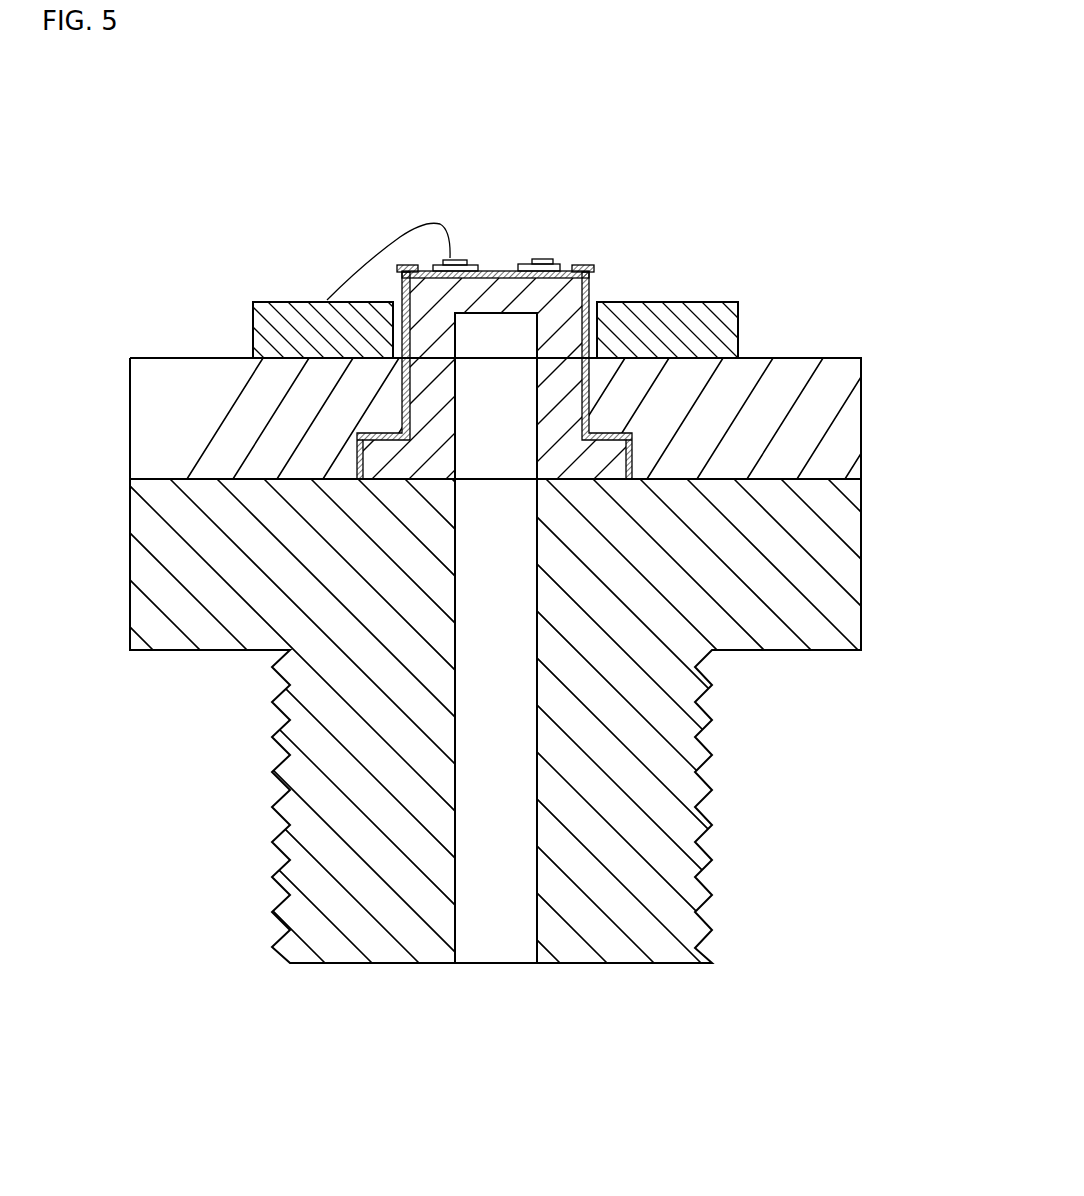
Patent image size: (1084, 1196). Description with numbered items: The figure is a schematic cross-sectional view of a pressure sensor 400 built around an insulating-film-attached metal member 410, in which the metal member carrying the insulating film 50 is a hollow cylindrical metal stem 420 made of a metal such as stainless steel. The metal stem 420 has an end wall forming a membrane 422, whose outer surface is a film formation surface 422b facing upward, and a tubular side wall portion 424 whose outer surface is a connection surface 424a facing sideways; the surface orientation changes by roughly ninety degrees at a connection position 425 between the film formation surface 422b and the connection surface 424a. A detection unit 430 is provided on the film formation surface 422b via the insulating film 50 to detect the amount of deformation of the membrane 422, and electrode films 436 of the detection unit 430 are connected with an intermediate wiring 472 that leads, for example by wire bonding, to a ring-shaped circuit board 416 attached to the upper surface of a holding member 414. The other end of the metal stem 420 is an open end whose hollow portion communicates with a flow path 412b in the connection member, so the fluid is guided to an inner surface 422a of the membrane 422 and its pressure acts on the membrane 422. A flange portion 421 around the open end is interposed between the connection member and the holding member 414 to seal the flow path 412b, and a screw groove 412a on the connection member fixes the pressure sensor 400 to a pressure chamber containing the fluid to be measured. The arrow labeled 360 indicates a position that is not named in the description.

The pressure sensor 400 is at (178, 163).
The insulating-film-attached metal member 410 is at (702, 125).
The screw groove 412a is at (807, 591).
The flow path 412b is at (453, 887).
The holding member 414 is at (800, 387).
The circuit board 416 is at (707, 330).
The metal stem 420 is at (612, 408).
The flange portion 421 is at (383, 463).
The membrane 422 is at (402, 294).
The inner surface 422a is at (490, 313).
The film formation surface 422b is at (521, 268).
The tubular side wall portion 424 is at (433, 395).
The connection surface 424a is at (402, 375).
The connection position 425 is at (398, 292).
The detection unit 430 is at (470, 264).
The electrode films 436 is at (455, 260).
The intermediate wiring 472 is at (356, 272).
The sensing element 360 is at (550, 343).
The insulating film 50 is at (590, 300).